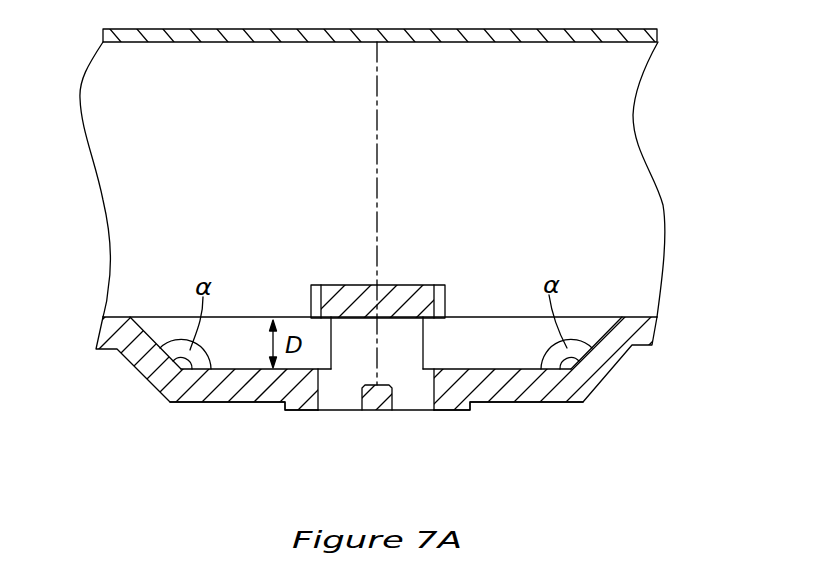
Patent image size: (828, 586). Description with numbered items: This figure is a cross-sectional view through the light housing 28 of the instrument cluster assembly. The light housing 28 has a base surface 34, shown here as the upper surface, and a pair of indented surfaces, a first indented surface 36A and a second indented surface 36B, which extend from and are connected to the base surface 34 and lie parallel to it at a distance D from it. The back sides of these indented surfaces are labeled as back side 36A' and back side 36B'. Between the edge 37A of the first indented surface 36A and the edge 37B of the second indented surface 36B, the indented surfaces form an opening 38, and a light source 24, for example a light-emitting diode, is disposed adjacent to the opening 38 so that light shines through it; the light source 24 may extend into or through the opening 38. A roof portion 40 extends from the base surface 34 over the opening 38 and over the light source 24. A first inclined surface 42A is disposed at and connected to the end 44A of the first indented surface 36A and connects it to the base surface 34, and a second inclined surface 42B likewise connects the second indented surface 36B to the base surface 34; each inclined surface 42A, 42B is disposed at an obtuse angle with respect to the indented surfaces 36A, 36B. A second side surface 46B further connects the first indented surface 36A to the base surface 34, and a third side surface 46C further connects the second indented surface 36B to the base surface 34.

The light housing 28 is at (700, 241).
The base surface 34 is at (122, 317).
The first inclined surface 42A is at (157, 317).
The second inclined surface 42B is at (603, 323).
The first indented surface 36A is at (256, 308).
The second indented surface 36B is at (497, 308).
The back side of first indented surface 36A' is at (244, 430).
The back side of second indented surface 36B' is at (508, 429).
The second side surface 46B is at (287, 327).
The third side surface 46C is at (467, 327).
The roof portion 40 is at (412, 284).
The edge of first indented surface 37A is at (320, 391).
The edge of second indented surface 37B is at (433, 391).
The opening 38 is at (344, 394).
The light source 24 is at (382, 411).
The end of first indented surface 44A is at (180, 361).